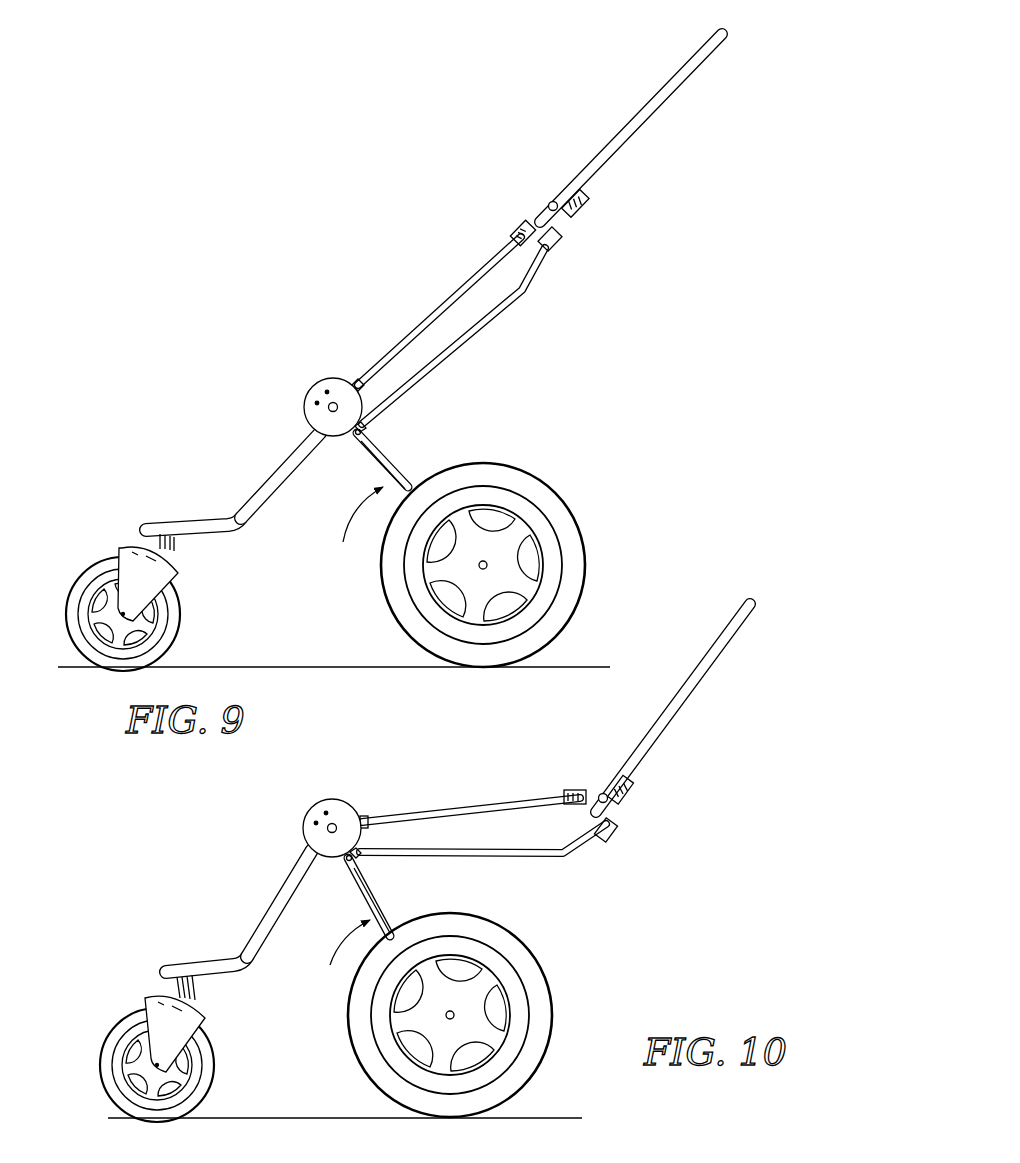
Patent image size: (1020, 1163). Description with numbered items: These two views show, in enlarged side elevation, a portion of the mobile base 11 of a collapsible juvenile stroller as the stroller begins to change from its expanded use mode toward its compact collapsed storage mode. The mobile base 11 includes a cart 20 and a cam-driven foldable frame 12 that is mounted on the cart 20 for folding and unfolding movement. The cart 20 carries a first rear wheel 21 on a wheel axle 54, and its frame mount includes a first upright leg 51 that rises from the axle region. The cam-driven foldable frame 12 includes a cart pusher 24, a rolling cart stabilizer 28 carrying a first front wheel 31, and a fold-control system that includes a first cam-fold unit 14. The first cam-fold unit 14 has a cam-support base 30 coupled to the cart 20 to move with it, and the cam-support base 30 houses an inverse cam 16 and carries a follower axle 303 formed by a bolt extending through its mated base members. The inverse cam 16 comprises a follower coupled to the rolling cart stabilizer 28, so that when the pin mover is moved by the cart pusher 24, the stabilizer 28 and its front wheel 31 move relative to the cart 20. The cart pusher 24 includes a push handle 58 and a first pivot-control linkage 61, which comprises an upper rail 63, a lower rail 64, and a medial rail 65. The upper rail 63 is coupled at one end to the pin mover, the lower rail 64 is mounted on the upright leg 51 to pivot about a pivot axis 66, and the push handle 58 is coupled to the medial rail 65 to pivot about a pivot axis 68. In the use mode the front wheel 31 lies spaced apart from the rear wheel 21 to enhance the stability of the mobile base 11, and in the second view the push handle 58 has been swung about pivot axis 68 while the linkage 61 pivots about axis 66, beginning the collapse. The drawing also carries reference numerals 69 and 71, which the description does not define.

In FIG. 9, the mobile base 11 is at (468, 178).
In FIG. 10, the mobile base 11 is at (243, 865).
In FIG. 9, the cam-driven foldable frame 12 is at (212, 480).
In FIG. 10, the cam-driven foldable frame 12 is at (187, 928).
In FIG. 9, the first cam-fold unit 14 is at (311, 374).
In FIG. 10, the first cam-fold unit 14 is at (331, 801).
In FIG. 10, the inverse cam 16 is at (308, 831).
In FIG. 9, the cart 20 is at (360, 530).
In FIG. 10, the cart 20 is at (336, 959).
In FIG. 9, the first rear wheel 21 is at (595, 548).
In FIG. 10, the first rear wheel 21 is at (560, 1002).
In FIG. 9, the cart pusher 24 is at (572, 250).
In FIG. 10, the cart pusher 24 is at (655, 830).
In FIG. 9, the rolling cart stabilizer 28 is at (150, 515).
In FIG. 10, the rolling cart stabilizer 28 is at (140, 975).
In FIG. 9, the cam-support base 30 is at (304, 407).
In FIG. 10, the cam-support base 30 is at (313, 810).
In FIG. 9, the first front wheel 31 is at (185, 640).
In FIG. 10, the first front wheel 31 is at (218, 1090).
In FIG. 9, the first upright leg 51 is at (405, 462).
In FIG. 10, the first upright leg 51 is at (390, 915).
In FIG. 9, the wheel axle 54 is at (487, 560).
In FIG. 10, the wheel axle 54 is at (454, 1010).
In FIG. 9, the push handle 58 is at (615, 125).
In FIG. 10, the push handle 58 is at (722, 679).
In FIG. 9, the first pivot-control linkage 61 is at (481, 330).
In FIG. 10, the first pivot-control linkage 61 is at (483, 815).
In FIG. 9, the upper rail 63 is at (438, 310).
In FIG. 10, the upper rail 63 is at (462, 815).
In FIG. 9, the lower rail 64 is at (470, 343).
In FIG. 10, the lower rail 64 is at (515, 857).
In FIG. 9, the medial rail 65 is at (574, 222).
In FIG. 10, the medial rail 65 is at (628, 800).
In FIG. 9, the pivot axis 66 is at (364, 425).
In FIG. 10, the pivot axis 66 is at (370, 842).
In FIG. 9, the pivot axis 68 is at (550, 203).
In FIG. 10, the pivot axis 68 is at (602, 792).
In FIG. 9, the ground 69 is at (578, 667).
In FIG. 10, the ground 69 is at (545, 1118).
In FIG. 9, the frame bend 71 is at (241, 528).
In FIG. 10, the frame bend 71 is at (240, 962).
In FIG. 9, the follower axle 303 is at (335, 403).
In FIG. 10, the follower axle 303 is at (338, 824).